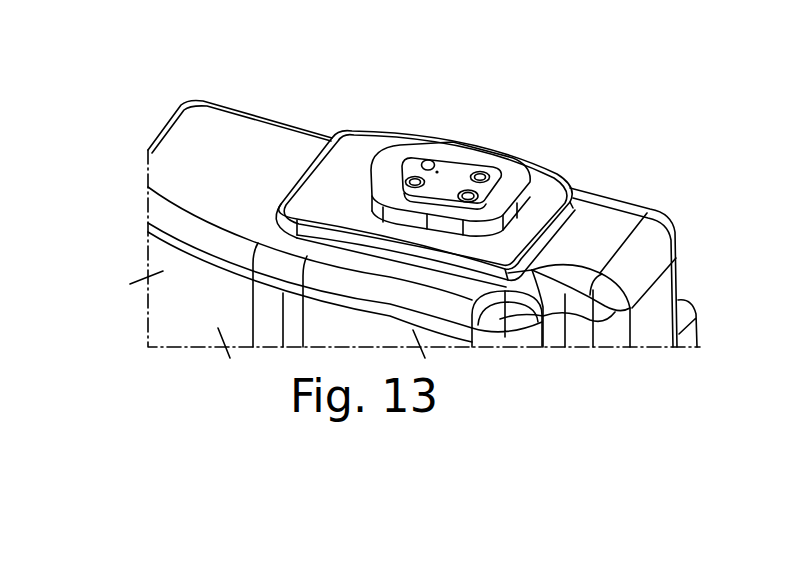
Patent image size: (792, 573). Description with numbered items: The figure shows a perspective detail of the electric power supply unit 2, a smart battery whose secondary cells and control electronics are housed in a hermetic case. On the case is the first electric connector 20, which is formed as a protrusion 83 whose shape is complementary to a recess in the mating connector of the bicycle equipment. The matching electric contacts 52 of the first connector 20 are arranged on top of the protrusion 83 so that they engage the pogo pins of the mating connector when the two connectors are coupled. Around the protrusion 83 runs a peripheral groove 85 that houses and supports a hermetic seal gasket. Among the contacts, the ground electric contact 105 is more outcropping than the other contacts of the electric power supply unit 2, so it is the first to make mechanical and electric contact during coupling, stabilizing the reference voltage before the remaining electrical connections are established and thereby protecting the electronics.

The electric power supply unit 2 is at (650, 247).
The first electric connector 20 is at (337, 112).
The electric contacts 52 is at (459, 118).
The protrusion 83 is at (407, 138).
The peripheral groove 85 is at (429, 221).
The ground electric contact 105 is at (429, 159).